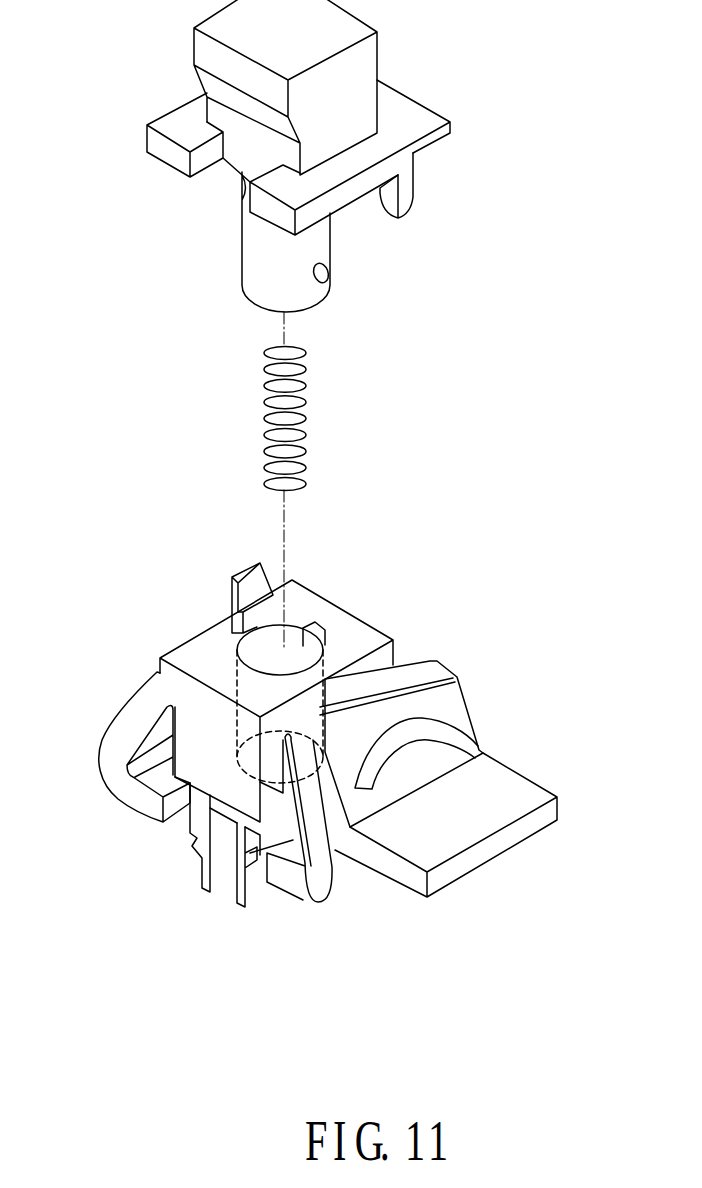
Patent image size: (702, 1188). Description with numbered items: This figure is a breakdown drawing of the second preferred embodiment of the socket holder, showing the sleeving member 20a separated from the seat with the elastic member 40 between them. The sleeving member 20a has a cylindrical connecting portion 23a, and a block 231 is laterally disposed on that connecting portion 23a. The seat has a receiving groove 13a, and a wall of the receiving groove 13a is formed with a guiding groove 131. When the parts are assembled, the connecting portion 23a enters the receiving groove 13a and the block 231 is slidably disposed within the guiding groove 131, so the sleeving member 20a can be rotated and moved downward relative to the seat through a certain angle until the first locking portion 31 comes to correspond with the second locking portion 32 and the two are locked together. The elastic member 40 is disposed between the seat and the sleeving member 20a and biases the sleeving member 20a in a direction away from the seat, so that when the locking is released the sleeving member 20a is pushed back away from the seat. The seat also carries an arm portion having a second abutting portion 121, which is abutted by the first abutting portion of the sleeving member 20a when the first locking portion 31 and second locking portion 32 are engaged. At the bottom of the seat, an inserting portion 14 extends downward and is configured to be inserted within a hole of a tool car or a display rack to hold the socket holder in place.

The sleeving member 20a is at (337, 169).
The second locking portion 32 is at (403, 195).
The connecting portion 23a is at (317, 243).
The block 231 is at (330, 277).
The elastic member 40 is at (305, 415).
The second abutting portion 121 is at (257, 583).
The guiding groove 131 is at (317, 627).
The receiving groove 13a is at (267, 657).
The first locking portion 31 is at (398, 670).
The inserting portion 14 is at (203, 888).